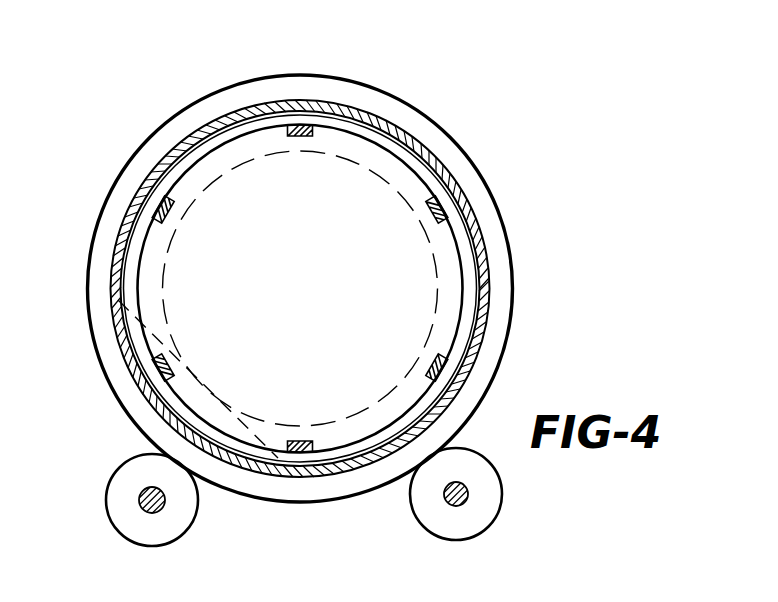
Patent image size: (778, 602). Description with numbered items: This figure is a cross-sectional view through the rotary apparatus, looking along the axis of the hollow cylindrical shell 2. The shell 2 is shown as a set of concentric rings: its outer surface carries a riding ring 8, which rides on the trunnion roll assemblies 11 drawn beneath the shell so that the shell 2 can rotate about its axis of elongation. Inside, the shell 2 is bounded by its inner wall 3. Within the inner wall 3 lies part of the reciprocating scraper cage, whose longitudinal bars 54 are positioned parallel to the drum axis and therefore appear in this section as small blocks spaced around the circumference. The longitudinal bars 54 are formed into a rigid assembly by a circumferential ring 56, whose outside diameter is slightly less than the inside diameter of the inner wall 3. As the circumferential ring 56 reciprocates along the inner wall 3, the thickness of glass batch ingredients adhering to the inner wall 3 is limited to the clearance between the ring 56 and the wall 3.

The hollow cylindrical shell 2 is at (413, 133).
The inner wall 3 is at (440, 170).
The riding rings 8 is at (100, 252).
The trunnion roll assemblies 11 is at (470, 528).
The longitudinal bars 54 is at (438, 213).
The circumferential rings 56 is at (168, 186).